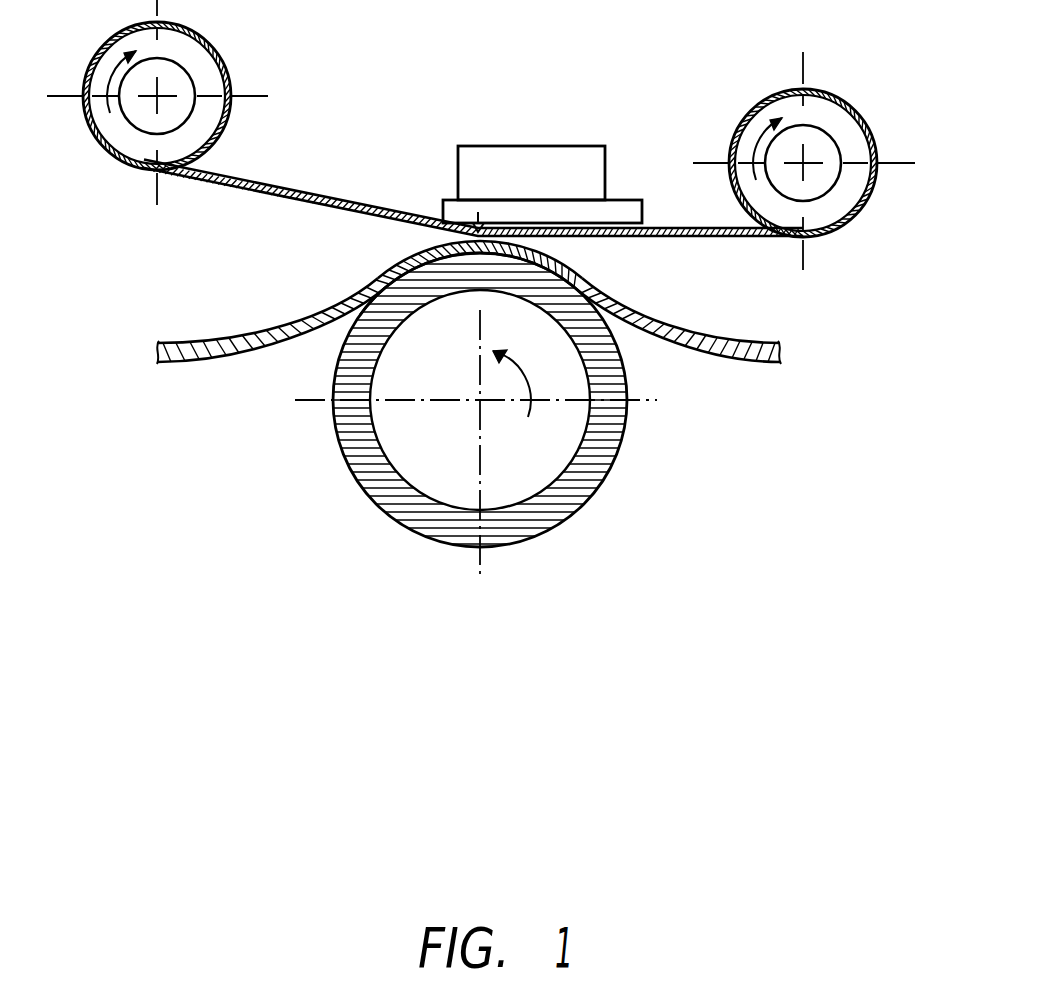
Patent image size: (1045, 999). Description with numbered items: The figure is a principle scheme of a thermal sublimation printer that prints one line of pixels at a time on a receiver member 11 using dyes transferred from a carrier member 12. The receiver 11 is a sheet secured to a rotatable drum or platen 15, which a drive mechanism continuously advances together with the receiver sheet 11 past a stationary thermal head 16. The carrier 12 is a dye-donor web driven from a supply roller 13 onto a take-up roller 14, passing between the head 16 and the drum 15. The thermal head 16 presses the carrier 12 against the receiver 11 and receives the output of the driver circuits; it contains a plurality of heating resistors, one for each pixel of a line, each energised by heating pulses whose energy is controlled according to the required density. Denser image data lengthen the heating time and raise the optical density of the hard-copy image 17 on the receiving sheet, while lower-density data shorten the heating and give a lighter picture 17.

The receiver member 11 is at (715, 357).
The carrier member 12 is at (695, 237).
The supply roller 13 is at (778, 90).
The take-up roller 14 is at (219, 56).
The rotatable drum 15 is at (623, 427).
The thermal head 16 is at (550, 152).
The hard-copy image 17 is at (383, 272).